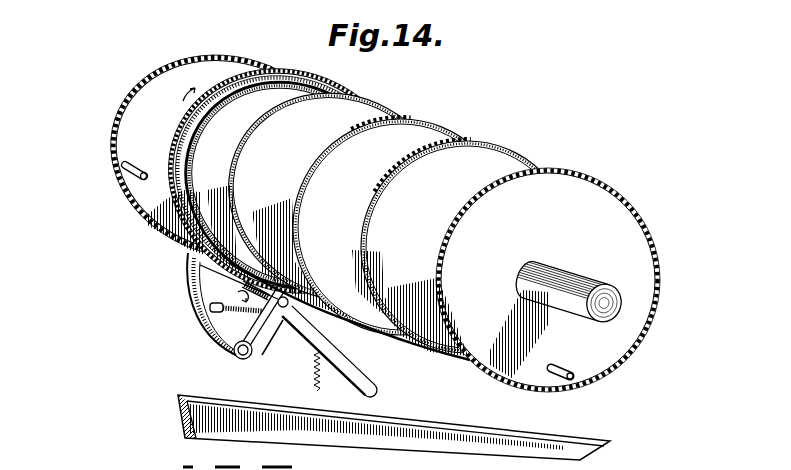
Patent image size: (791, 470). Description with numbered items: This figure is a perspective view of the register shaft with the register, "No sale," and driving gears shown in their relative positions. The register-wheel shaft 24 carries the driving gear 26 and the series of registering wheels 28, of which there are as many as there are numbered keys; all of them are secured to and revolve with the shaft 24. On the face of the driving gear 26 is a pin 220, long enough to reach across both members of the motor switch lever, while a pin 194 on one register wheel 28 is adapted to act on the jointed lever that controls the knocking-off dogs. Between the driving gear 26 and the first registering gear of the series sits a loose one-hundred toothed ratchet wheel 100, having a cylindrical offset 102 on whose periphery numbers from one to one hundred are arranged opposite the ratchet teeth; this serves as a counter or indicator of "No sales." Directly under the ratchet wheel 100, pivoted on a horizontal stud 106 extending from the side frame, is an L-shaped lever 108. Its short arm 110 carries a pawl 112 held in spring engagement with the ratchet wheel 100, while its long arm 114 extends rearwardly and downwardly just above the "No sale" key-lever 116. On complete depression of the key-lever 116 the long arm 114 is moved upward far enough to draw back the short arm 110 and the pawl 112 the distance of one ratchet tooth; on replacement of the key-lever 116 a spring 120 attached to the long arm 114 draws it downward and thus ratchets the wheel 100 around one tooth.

The driving gear 26 is at (228, 156).
The ratchet wheel 100 is at (180, 139).
The cylindrical offset 102 is at (292, 185).
The registering wheels 28 is at (403, 223).
The pin 220 is at (124, 170).
The register-wheel shaft 24 is at (604, 303).
The pin 194 is at (574, 378).
The horizontal stud 106 is at (241, 284).
The pawl 112 is at (205, 302).
The short arm 110 is at (261, 335).
The long arm 114 is at (366, 382).
The L-shaped lever 108 is at (283, 339).
The spring 120 is at (299, 372).
The key-lever 116 is at (443, 421).